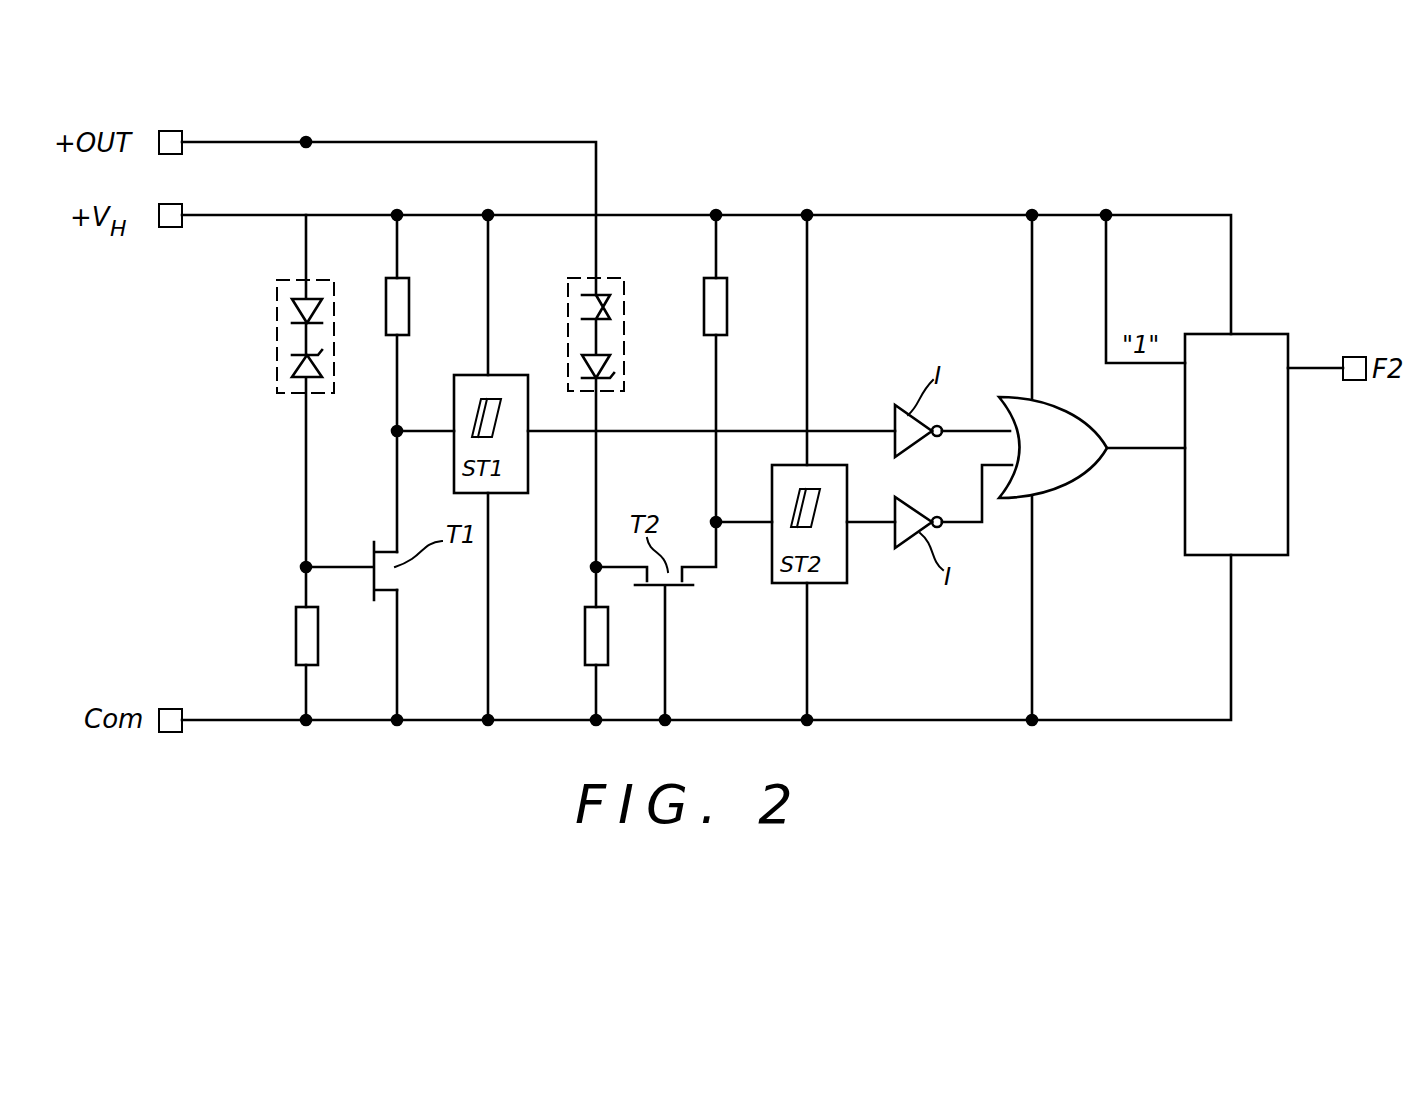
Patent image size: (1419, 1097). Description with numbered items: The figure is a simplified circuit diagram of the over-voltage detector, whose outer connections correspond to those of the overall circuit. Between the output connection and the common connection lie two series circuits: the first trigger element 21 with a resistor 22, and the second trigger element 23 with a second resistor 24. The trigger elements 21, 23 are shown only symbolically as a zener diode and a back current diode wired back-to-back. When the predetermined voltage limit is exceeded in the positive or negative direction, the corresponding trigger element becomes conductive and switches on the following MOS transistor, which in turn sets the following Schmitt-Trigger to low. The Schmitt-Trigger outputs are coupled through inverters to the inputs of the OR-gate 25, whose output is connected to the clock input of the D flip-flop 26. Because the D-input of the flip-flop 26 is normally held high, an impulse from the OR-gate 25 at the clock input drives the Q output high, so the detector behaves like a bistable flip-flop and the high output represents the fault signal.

The first trigger element 21 is at (277, 313).
The resistor 22 is at (296, 635).
The second trigger element 23 is at (568, 313).
The second resistor 24 is at (585, 635).
The OR-gate 25 is at (1087, 480).
The D flip-flop 26 is at (1288, 492).